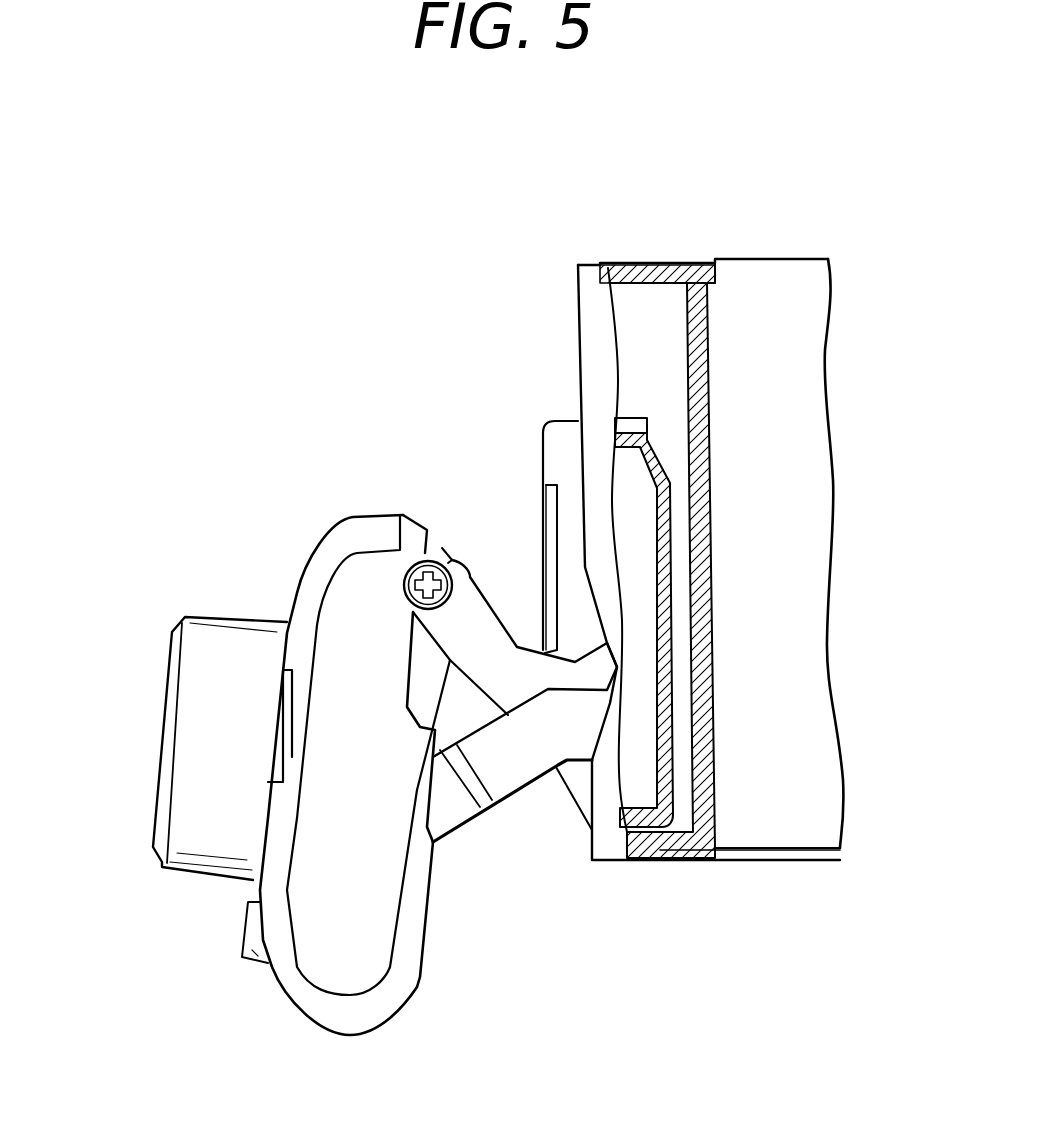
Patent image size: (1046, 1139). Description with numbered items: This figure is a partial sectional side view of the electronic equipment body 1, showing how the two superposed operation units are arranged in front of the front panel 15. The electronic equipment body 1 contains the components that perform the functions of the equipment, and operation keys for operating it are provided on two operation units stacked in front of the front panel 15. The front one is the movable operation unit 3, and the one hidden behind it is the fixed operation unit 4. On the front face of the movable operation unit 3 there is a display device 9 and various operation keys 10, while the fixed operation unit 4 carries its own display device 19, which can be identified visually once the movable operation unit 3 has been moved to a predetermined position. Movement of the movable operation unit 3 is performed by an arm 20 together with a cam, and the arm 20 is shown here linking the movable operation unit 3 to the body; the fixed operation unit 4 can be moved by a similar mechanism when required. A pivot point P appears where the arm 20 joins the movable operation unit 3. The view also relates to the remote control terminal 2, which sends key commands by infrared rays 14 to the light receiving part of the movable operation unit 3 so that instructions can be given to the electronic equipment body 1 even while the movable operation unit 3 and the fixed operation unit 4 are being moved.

The electronic equipment body 1 is at (774, 191).
The remote control terminal 2 is at (804, 253).
The movable operation unit 3 is at (369, 509).
The fixed operation unit 4 is at (551, 416).
The display device 9 is at (282, 703).
The operation keys 10 is at (150, 800).
The infrared rays 14 is at (822, 493).
The front panel 15 is at (707, 383).
The display device 19 is at (545, 521).
The arm 20 is at (497, 690).
The screw P is at (458, 562).